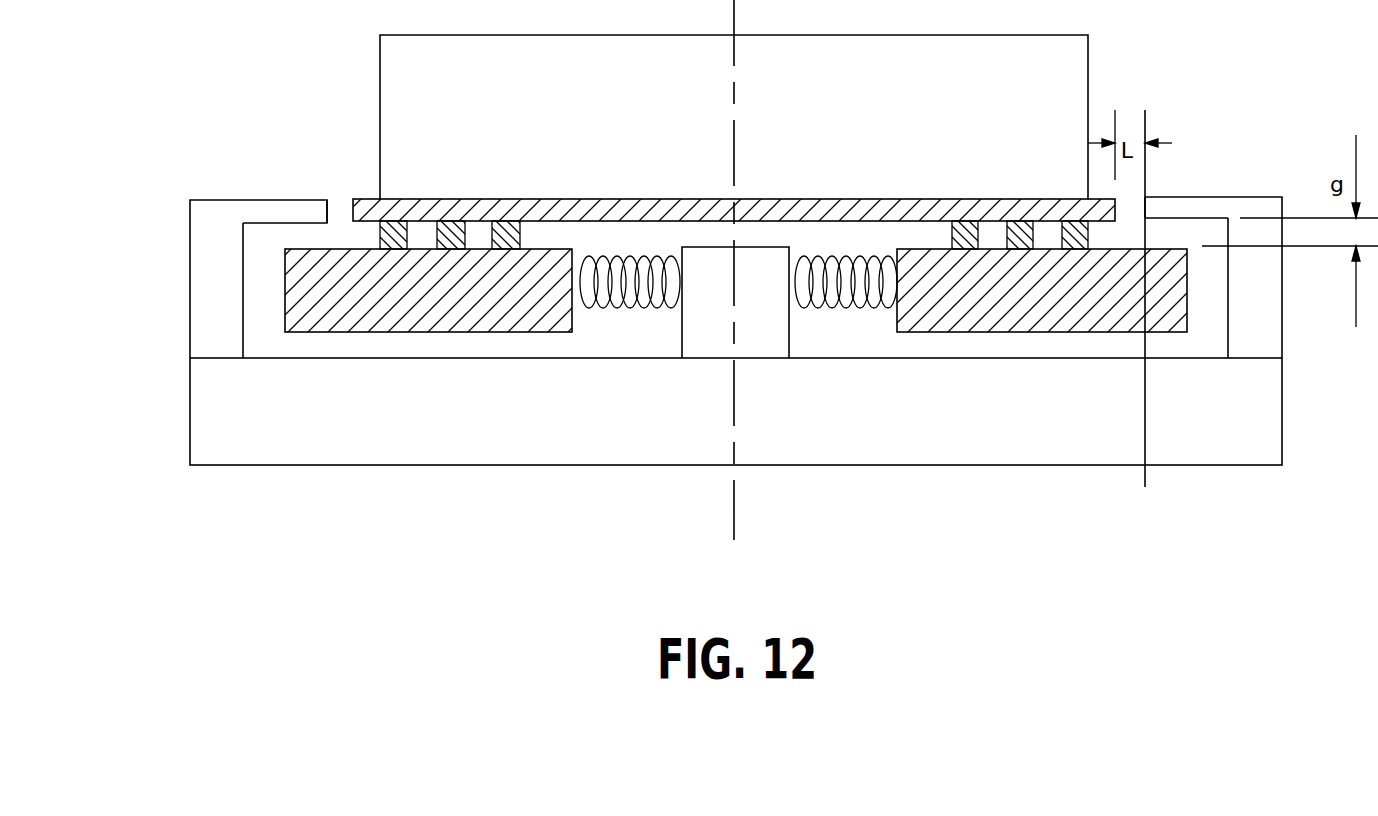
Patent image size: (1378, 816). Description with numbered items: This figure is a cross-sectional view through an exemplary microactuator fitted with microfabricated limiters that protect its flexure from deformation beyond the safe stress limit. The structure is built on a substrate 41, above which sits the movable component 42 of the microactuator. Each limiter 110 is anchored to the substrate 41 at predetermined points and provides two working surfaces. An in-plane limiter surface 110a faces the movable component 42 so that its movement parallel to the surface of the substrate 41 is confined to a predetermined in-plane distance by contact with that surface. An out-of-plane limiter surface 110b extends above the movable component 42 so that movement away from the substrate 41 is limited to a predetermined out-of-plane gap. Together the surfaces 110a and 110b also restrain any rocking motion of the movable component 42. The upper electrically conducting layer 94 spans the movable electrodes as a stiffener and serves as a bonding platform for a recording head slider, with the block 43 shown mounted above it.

The substrate 41 is at (1270, 416).
The movable component 42 is at (425, 315).
The support block 43 is at (400, 62).
The upper electrically conducting layer 94 is at (368, 210).
The limiter 110 is at (210, 250).
The in-plane limiter surface 110a is at (244, 320).
The out-of-plane limiter surface 110b is at (327, 200).